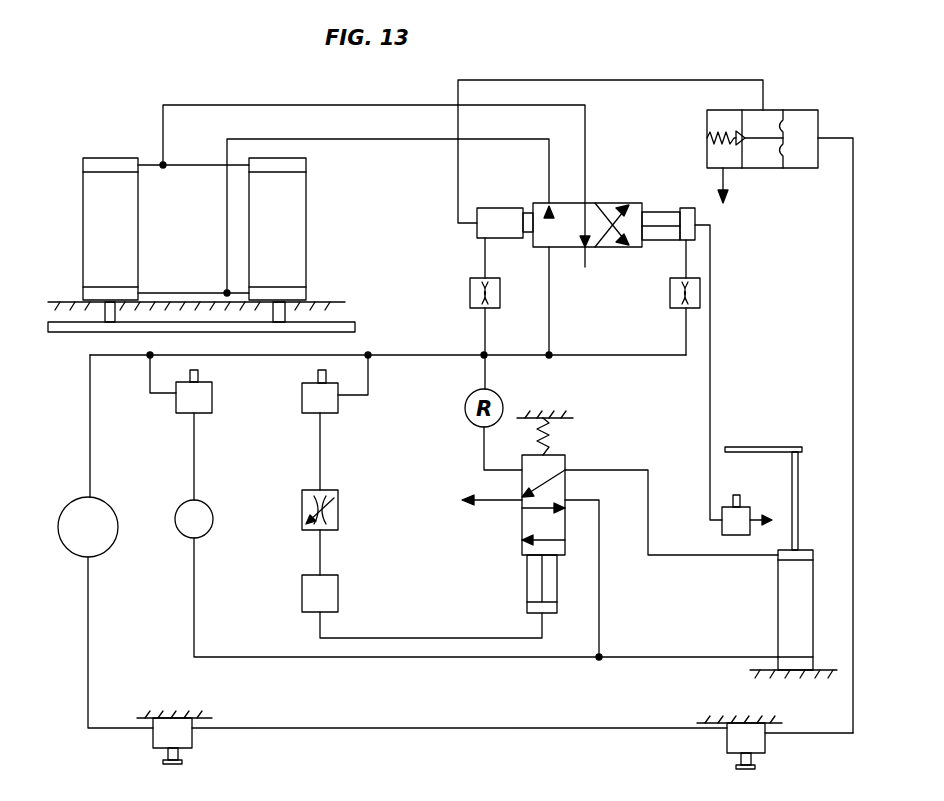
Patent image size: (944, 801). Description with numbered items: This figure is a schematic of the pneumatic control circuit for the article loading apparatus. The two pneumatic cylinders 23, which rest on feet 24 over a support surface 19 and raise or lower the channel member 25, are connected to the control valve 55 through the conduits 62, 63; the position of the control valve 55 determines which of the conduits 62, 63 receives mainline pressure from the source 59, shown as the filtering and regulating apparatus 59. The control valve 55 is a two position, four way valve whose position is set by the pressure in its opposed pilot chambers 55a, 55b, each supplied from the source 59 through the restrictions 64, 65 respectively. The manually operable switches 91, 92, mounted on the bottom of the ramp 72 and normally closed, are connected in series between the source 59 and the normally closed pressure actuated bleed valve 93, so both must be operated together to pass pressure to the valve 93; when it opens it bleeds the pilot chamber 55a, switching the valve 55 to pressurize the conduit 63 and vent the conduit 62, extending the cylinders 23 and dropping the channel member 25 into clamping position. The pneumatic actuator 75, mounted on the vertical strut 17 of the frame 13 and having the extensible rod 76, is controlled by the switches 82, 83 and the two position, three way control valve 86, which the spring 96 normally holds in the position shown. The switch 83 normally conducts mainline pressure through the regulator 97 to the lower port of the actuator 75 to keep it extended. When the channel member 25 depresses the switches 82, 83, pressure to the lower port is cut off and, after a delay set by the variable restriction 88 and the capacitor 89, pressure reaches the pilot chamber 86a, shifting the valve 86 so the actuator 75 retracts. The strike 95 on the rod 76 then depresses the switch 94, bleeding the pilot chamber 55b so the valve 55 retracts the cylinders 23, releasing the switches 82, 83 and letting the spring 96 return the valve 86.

The machine frame 13 is at (571, 419).
The vertical strut member 17 is at (753, 672).
The support surface 19 is at (344, 302).
The pneumatic cylinders 23 is at (122, 226).
The cylinder feet 24 is at (104, 312).
The channel member 25 is at (355, 324).
The control valve 55 is at (629, 205).
The pilot pressure chamber 55a is at (494, 208).
The pilot pressure chamber 55b is at (663, 214).
The filtering and regulating apparatus 59 is at (66, 554).
The pneumatic conduit 62 is at (387, 139).
The pneumatic conduit 63 is at (346, 105).
The restriction 64 is at (470, 297).
The restriction 65 is at (670, 300).
The ramp 72 is at (210, 718).
The pneumatic actuator 75 is at (786, 612).
The extensible rod 76 is at (799, 500).
The pneumatic switch 82 is at (312, 415).
The pneumatic switch 83 is at (184, 415).
The control valve 86 is at (566, 459).
The pilot chamber 86a is at (527, 590).
The variable restriction 88 is at (340, 500).
The capacitor 89 is at (340, 592).
The manually operable switch 91 is at (158, 746).
The manually operable switch 92 is at (730, 751).
The pressure actuated bleed valve 93 is at (791, 112).
The pneumatic switch 94 is at (724, 526).
The strike 95 is at (738, 447).
The spring 96 is at (539, 432).
The regulator 97 is at (183, 534).